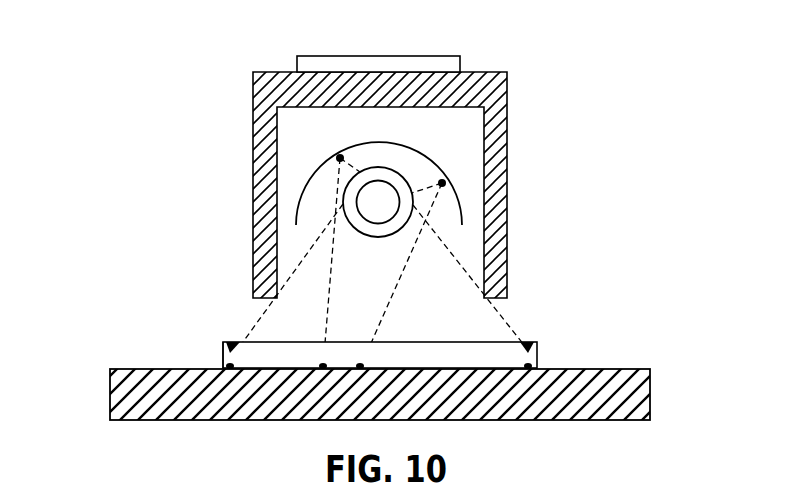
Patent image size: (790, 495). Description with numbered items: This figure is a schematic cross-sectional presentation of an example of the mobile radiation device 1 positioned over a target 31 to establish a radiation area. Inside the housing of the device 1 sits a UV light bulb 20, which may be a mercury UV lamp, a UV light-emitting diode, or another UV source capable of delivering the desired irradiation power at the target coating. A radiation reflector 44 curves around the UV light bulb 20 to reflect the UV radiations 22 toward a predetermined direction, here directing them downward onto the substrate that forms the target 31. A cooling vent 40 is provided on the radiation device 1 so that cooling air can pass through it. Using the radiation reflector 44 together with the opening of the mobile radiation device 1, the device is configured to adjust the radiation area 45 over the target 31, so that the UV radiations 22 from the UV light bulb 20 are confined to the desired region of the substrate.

The sensor device 1 is at (226, 180).
The UV light bulb 20 is at (343, 203).
The UV radiations 22 is at (258, 327).
The target 31 is at (612, 369).
The cooling vent 40 is at (297, 70).
The radiation reflector 44 is at (448, 178).
The radiation area 45 is at (442, 342).